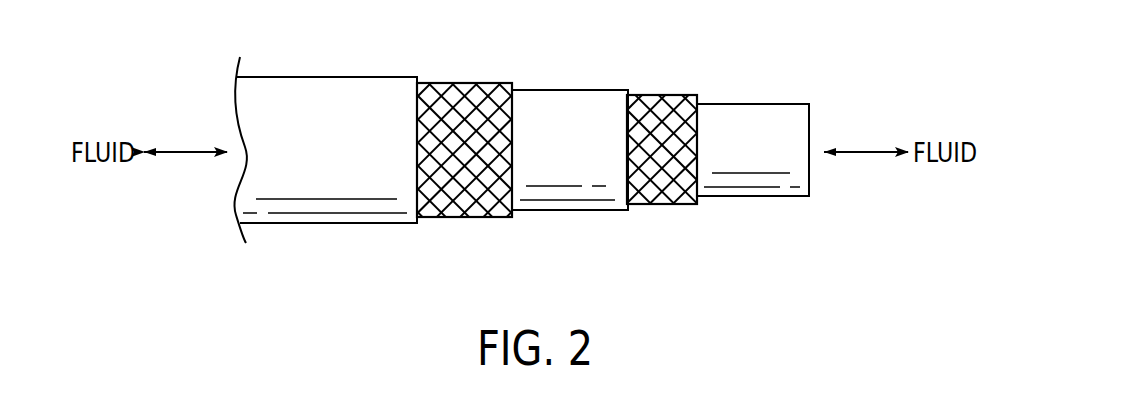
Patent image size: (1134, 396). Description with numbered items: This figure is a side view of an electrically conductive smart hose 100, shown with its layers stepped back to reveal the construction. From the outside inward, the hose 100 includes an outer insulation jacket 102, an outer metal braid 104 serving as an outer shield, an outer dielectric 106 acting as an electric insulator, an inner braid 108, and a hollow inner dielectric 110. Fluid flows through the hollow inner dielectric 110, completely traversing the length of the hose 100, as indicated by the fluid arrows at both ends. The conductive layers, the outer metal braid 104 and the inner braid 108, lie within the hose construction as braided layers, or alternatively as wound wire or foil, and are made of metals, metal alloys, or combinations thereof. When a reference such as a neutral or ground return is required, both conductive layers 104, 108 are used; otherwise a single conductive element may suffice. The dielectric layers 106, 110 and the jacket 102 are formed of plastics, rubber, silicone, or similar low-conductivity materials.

The smart hose 100 is at (690, 40).
The outer insulation jacket 102 is at (316, 192).
The outer metal braid 104 is at (457, 192).
The outer dielectric 106 is at (560, 192).
The inner braid 108 is at (657, 183).
The hollow inner dielectric 110 is at (750, 178).